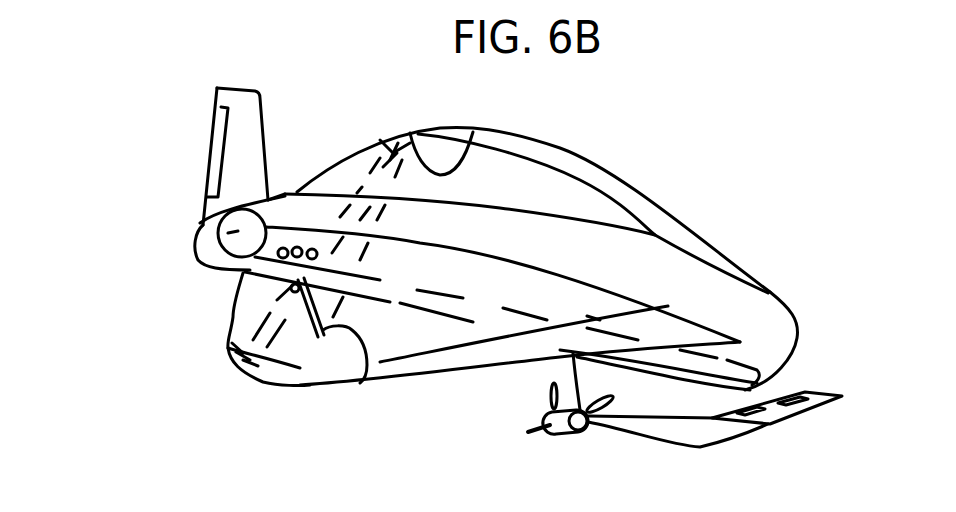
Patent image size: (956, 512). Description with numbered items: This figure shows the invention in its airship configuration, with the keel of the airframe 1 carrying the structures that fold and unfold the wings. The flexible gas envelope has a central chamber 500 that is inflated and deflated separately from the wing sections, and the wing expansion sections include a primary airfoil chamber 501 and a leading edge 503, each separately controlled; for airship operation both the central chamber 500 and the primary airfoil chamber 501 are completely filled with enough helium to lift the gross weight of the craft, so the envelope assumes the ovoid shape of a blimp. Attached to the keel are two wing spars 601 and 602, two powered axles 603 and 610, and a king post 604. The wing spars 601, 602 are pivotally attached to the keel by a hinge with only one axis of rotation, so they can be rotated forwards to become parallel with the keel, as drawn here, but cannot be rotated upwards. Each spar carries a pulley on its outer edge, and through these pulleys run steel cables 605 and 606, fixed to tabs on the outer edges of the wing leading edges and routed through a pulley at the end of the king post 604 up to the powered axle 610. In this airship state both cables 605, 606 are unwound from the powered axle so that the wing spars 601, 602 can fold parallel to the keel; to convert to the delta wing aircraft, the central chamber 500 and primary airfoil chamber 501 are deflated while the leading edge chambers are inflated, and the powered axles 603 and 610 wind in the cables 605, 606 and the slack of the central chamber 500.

The airframe 1 is at (516, 322).
The central chamber 500 is at (737, 302).
The primary airfoil chamber 501 is at (530, 180).
The leading edge 503 is at (641, 214).
The wing spar 601 is at (381, 147).
The wing spar 602 is at (233, 332).
The powered axle 603 is at (200, 238).
The king post 604 is at (367, 370).
The steel cable 605 is at (300, 368).
The steel cable 606 is at (466, 128).
The powered axle 610 is at (262, 284).